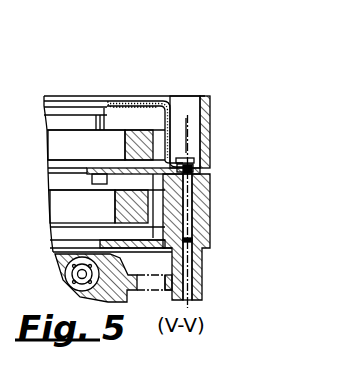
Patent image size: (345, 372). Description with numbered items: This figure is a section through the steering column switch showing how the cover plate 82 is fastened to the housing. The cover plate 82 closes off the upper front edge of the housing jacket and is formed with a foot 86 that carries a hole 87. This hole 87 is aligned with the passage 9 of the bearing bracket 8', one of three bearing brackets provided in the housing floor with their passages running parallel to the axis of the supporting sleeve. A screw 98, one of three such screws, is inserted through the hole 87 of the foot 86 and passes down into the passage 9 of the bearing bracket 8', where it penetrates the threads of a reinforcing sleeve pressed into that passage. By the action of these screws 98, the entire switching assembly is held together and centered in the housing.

The cover plate 82 is at (140, 102).
The foot 86 is at (170, 128).
The screw 98 is at (190, 160).
The hole 87 is at (183, 174).
The bearing bracket 8' is at (230, 219).
The passage 9 is at (196, 258).